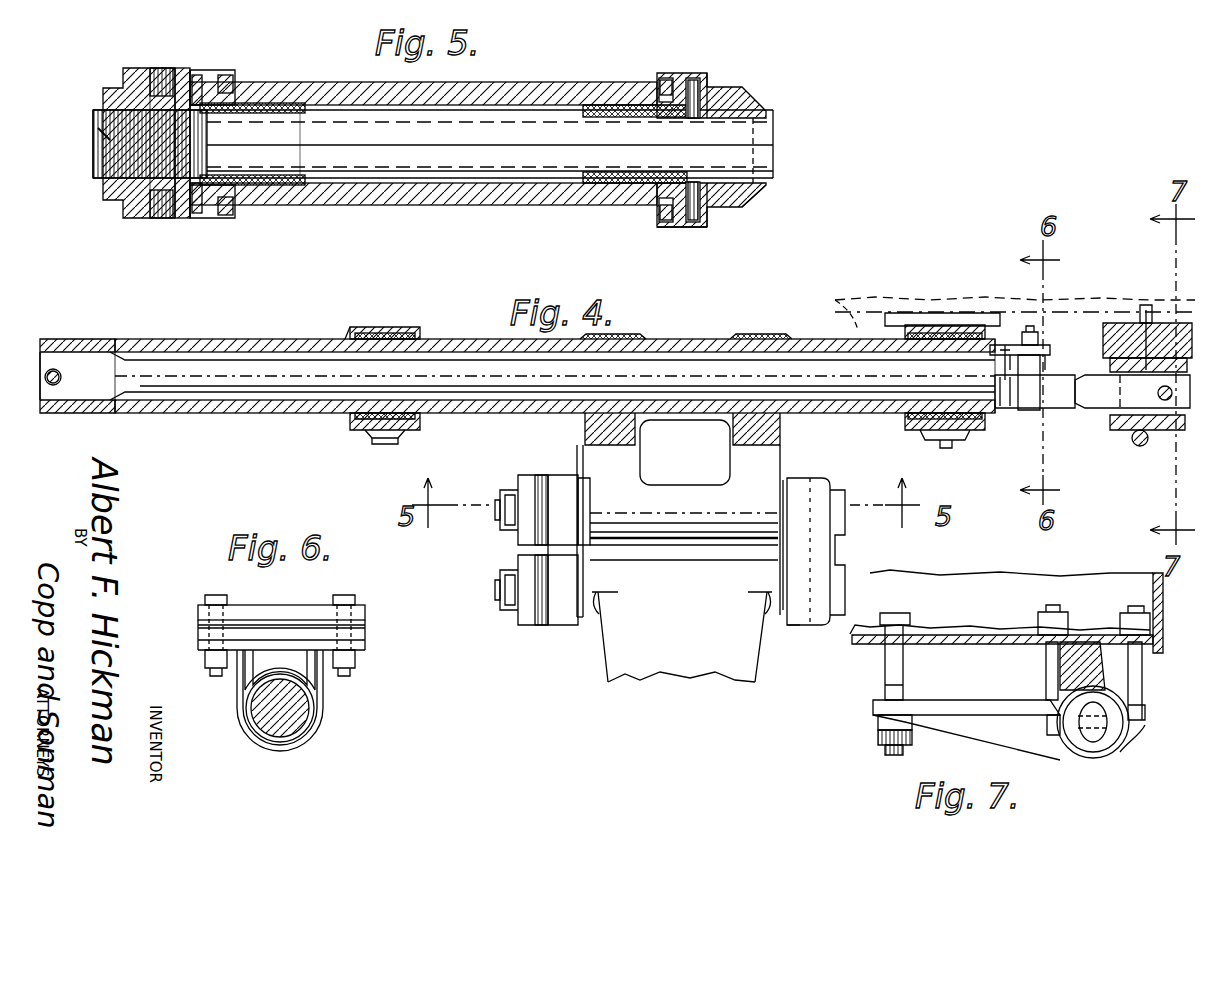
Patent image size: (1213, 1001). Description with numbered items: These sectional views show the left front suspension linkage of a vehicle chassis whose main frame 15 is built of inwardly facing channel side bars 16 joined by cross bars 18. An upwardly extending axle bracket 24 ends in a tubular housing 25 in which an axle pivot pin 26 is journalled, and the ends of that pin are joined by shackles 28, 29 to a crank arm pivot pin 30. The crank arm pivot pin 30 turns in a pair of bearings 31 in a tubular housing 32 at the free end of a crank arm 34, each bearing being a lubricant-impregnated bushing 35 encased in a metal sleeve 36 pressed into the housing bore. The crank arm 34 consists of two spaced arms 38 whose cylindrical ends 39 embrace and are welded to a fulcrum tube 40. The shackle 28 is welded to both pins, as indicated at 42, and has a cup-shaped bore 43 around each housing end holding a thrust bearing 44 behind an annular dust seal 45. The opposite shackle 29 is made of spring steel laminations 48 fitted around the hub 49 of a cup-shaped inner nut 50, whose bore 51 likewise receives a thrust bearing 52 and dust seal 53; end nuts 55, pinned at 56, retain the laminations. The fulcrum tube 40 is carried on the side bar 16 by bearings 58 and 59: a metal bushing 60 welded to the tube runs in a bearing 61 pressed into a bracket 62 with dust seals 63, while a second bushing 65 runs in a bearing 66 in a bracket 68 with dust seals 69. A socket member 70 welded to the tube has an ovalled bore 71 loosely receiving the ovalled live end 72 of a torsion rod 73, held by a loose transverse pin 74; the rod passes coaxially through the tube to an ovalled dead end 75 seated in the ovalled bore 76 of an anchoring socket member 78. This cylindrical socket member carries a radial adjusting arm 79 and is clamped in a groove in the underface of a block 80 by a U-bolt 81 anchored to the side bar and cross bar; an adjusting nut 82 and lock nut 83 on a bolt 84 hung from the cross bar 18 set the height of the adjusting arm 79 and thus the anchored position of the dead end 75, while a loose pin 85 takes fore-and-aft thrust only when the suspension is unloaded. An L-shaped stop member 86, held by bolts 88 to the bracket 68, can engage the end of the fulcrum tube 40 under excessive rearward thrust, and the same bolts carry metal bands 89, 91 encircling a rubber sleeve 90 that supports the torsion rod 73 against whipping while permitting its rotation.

In FIG. 4, the main frame 15 is at (878, 288).
In FIG. 4, the side frame channels 16 is at (862, 292).
In FIG. 4, the cross bars 18 is at (858, 648).
In FIG. 4, the axle bracket 24 is at (686, 684).
In FIG. 4, the tubular housing 25 is at (590, 640).
In FIG. 4, the axle pivot pin 26 is at (500, 585).
In FIG. 5, the shackle 28 is at (745, 220).
In FIG. 4, the shackle 28 is at (805, 636).
In FIG. 5, the shackle 29 is at (160, 226).
In FIG. 4, the shackle 29 is at (537, 640).
In FIG. 5, the crank arm pivot pin 30 is at (780, 147).
In FIG. 4, the crank arm pivot pin 30 is at (500, 515).
In FIG. 5, the bearings 31 is at (605, 105).
In FIG. 5, the tubular housing 32 is at (430, 208).
In FIG. 4, the tubular housing 32 is at (676, 486).
In FIG. 5, the crank arm 34 is at (494, 220).
In FIG. 4, the crank arm 34 is at (800, 437).
In FIG. 5, the bushing 35 is at (300, 110).
In FIG. 5, the metal sleeve 36 is at (296, 118).
In FIG. 4, the spaced arms 38 is at (730, 433).
In FIG. 4, the cylindrical ends 39 is at (740, 334).
In FIG. 4, the fulcrum tube 40 is at (240, 337).
In FIG. 5, the weld 42 is at (768, 110).
In FIG. 4, the weld 42 is at (824, 512).
In FIG. 5, the cup-shaped cylindrical bore 43 is at (655, 78).
In FIG. 5, the thrust bearing 44 is at (700, 68).
In FIG. 5, the annular dust seal 45 is at (665, 230).
In FIG. 5, the laminations 48 is at (162, 66).
In FIG. 5, the hub 49 is at (158, 108).
In FIG. 5, the cup-shaped inner nut 50 is at (183, 66).
In FIG. 4, the cup-shaped inner nut 50 is at (552, 478).
In FIG. 5, the cup-shaped cylindrical bore 51 is at (238, 213).
In FIG. 5, the thrust bearing 52 is at (193, 222).
In FIG. 5, the annular dust seal 53 is at (225, 73).
In FIG. 5, the end nuts 55 is at (110, 190).
In FIG. 4, the end nuts 55 is at (515, 540).
In FIG. 5, the pin 56 is at (104, 136).
In FIG. 4, the pin 56 is at (510, 605).
In FIG. 4, the bearing 58 is at (392, 316).
In FIG. 4, the bearing 59 is at (940, 323).
In FIG. 4, the metal bushing 60 is at (348, 338).
In FIG. 4, the bearing 61 is at (370, 438).
In FIG. 4, the bearing housing or bracket 62 is at (395, 444).
In FIG. 4, the annular dust seals 63 is at (352, 420).
In FIG. 4, the metal bushing 65 is at (905, 338).
In FIG. 4, the bearing 66 is at (948, 448).
In FIG. 4, the bearing housing or bracket 68 is at (930, 440).
In FIG. 6, the bearing housing or bracket 68 is at (288, 604).
In FIG. 4, the annular dust seals 69 is at (965, 330).
In FIG. 4, the socket member 70 is at (88, 414).
In FIG. 4, the ovalled bore 71 is at (72, 350).
In FIG. 4, the live end 72 is at (118, 355).
In FIG. 4, the torsion rod 73 is at (215, 395).
In FIG. 6, the torsion rod 73 is at (296, 728).
In FIG. 7, the torsion rod 73 is at (1088, 745).
In FIG. 4, the transverse pin 74 is at (52, 387).
In FIG. 4, the dead end 75 is at (1120, 403).
In FIG. 7, the dead end 75 is at (1090, 742).
In FIG. 4, the ovalled bore 76 is at (1120, 432).
In FIG. 7, the ovalled bore 76 is at (1105, 705).
In FIG. 4, the anchoring socket member 78 is at (1138, 447).
In FIG. 7, the anchoring socket member 78 is at (1065, 752).
In FIG. 7, the adjusting arm 79 is at (953, 700).
In FIG. 4, the block 80 is at (1170, 322).
In FIG. 7, the block 80 is at (1088, 642).
In FIG. 4, the U-bolt 81 is at (1144, 305).
In FIG. 7, the U-bolt 81 is at (1053, 610).
In FIG. 7, the adjusting nut 82 is at (878, 720).
In FIG. 7, the lock nut 83 is at (878, 742).
In FIG. 7, the bolt 84 is at (890, 758).
In FIG. 4, the pin 85 is at (1165, 402).
In FIG. 7, the pin 85 is at (1140, 722).
In FIG. 4, the L-shaped stop member 86 is at (1040, 350).
In FIG. 4, the bolts 88 is at (1030, 325).
In FIG. 6, the bolts 88 is at (210, 596).
In FIG. 4, the metal band 89 is at (1030, 412).
In FIG. 6, the metal band 89 is at (278, 752).
In FIG. 4, the rubber sleeve 90 is at (1012, 412).
In FIG. 6, the rubber sleeve 90 is at (258, 735).
In FIG. 6, the metal band 91 is at (320, 677).